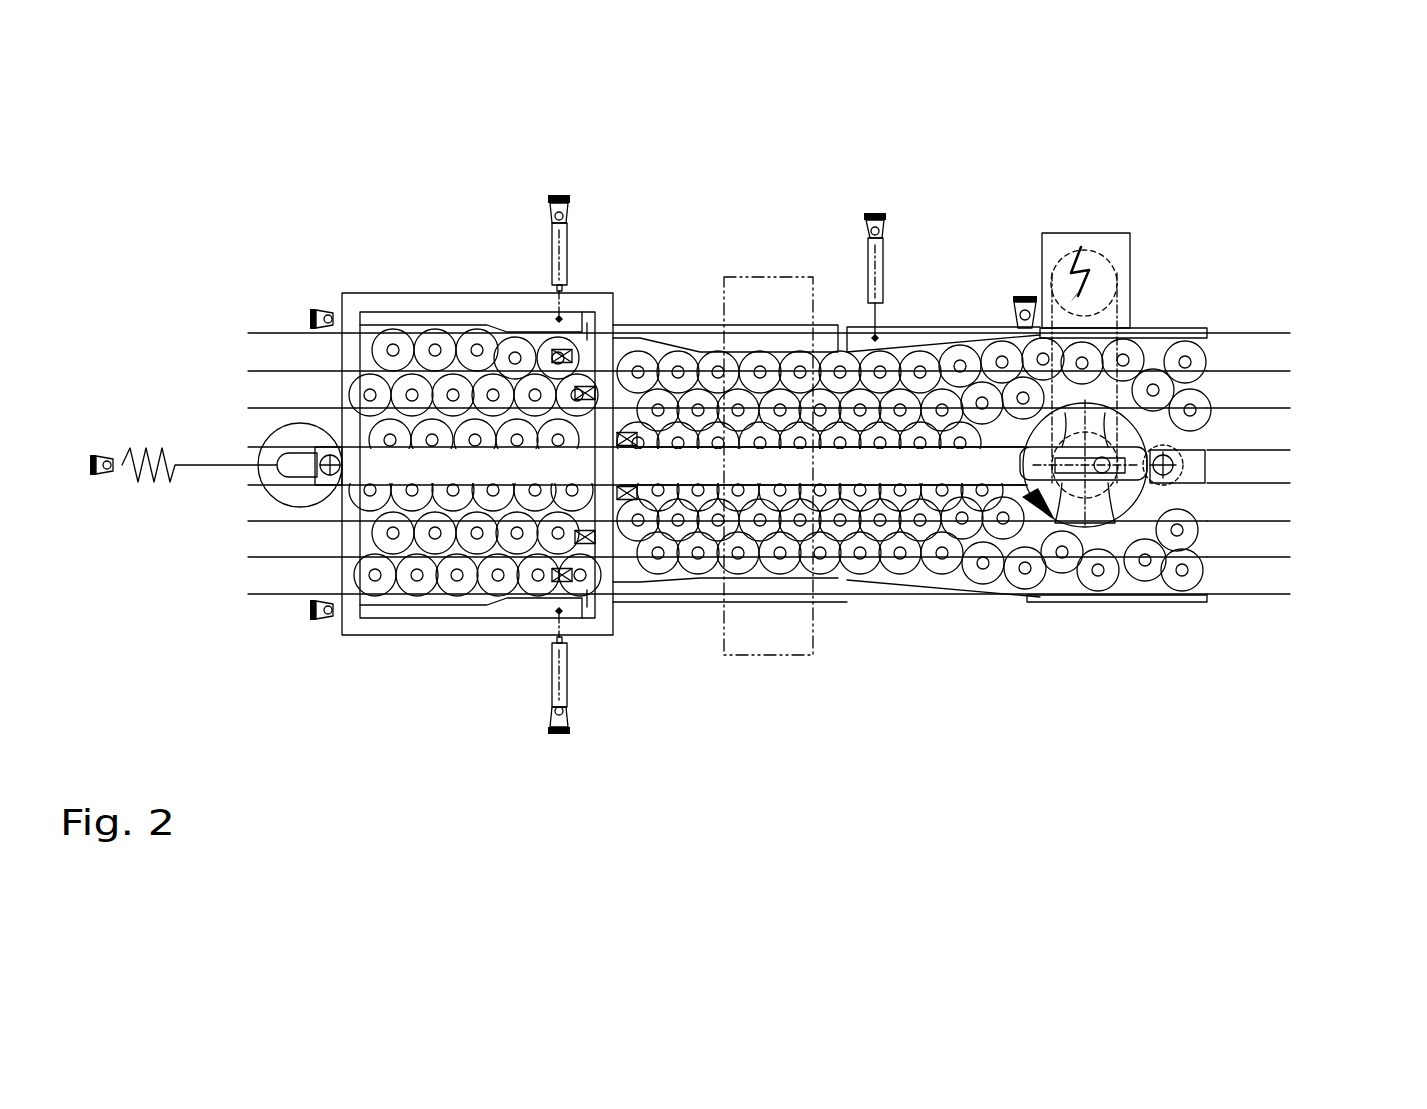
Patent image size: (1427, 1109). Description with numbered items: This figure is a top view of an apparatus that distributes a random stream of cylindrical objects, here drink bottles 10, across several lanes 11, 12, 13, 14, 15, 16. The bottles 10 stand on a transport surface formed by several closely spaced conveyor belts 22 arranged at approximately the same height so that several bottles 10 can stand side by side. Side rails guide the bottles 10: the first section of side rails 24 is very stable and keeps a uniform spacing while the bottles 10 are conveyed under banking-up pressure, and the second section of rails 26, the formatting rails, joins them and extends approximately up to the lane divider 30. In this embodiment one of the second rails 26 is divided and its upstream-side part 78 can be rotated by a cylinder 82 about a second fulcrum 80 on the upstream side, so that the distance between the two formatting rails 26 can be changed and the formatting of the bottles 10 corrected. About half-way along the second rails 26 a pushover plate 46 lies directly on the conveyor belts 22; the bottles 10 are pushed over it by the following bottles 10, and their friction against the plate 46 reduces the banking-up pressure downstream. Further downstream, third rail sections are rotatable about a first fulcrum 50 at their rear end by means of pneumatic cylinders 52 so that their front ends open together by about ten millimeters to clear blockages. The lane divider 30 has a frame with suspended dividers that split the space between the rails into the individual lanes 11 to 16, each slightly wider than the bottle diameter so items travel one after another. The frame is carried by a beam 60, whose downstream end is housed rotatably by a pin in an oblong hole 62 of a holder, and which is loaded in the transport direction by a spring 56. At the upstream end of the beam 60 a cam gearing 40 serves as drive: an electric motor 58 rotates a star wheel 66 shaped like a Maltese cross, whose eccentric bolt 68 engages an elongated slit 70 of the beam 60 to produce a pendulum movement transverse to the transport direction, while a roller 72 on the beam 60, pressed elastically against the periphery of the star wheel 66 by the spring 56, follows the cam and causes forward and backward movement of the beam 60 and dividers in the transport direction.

The drink bottles 10 is at (900, 567).
The lane 11 is at (707, 578).
The lane 12 is at (707, 532).
The lane 13 is at (617, 486).
The lane 14 is at (707, 435).
The lane 15 is at (707, 392).
The lane 16 is at (707, 350).
The conveyor belts 22 is at (1282, 467).
The first section of side rails 24 is at (1160, 332).
The second section of rail 26 is at (700, 342).
The lane divider 30 is at (456, 663).
The cam gearing 40 is at (1073, 433).
The pushover plate 46 is at (760, 623).
The first fulcrum 50 is at (327, 312).
The pneumatic cylinders 52 is at (562, 255).
The spring 56 is at (142, 482).
The electric motor 58 is at (1110, 255).
The beam 60 is at (677, 462).
The oblong hole 62 is at (297, 467).
The star wheel 66 is at (1077, 510).
The eccentric bolt 68 is at (1102, 472).
The slit 70 is at (1063, 470).
The roller 72 is at (1205, 452).
The upstream-side part 78 is at (907, 345).
The second fulcrum 80 is at (1022, 295).
The cylinder 82 is at (870, 252).